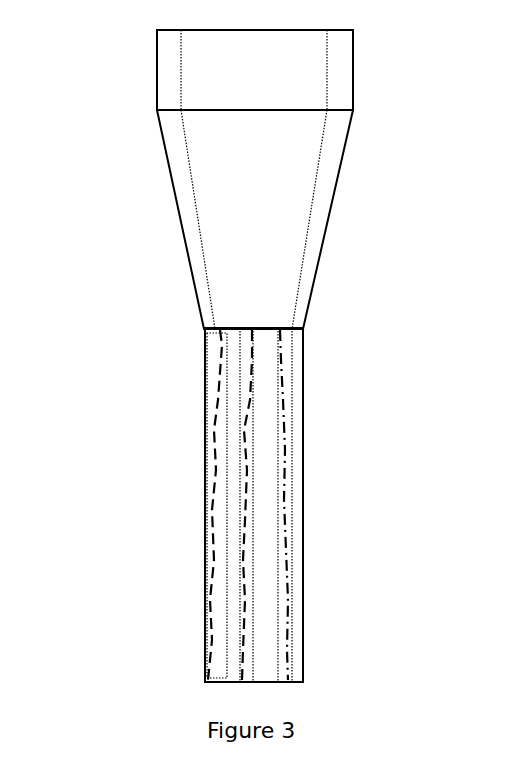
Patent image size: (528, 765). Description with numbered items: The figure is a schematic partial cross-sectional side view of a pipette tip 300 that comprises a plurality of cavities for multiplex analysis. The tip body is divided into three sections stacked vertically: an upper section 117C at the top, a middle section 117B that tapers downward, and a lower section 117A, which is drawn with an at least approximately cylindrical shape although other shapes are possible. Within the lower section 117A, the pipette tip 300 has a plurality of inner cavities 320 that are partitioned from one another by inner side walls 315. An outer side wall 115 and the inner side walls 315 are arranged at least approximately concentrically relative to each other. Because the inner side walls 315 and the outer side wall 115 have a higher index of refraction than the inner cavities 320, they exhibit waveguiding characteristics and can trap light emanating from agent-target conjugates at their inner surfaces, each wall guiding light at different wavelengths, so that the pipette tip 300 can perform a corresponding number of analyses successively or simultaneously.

The pipette tip 300 is at (128, 177).
The upper section 117C is at (388, 35).
The middle section 117B is at (383, 108).
The lower section 117A is at (368, 332).
The inner cavities 320 is at (237, 377).
The outer side wall 115 is at (213, 504).
The inner side walls 315 is at (245, 597).